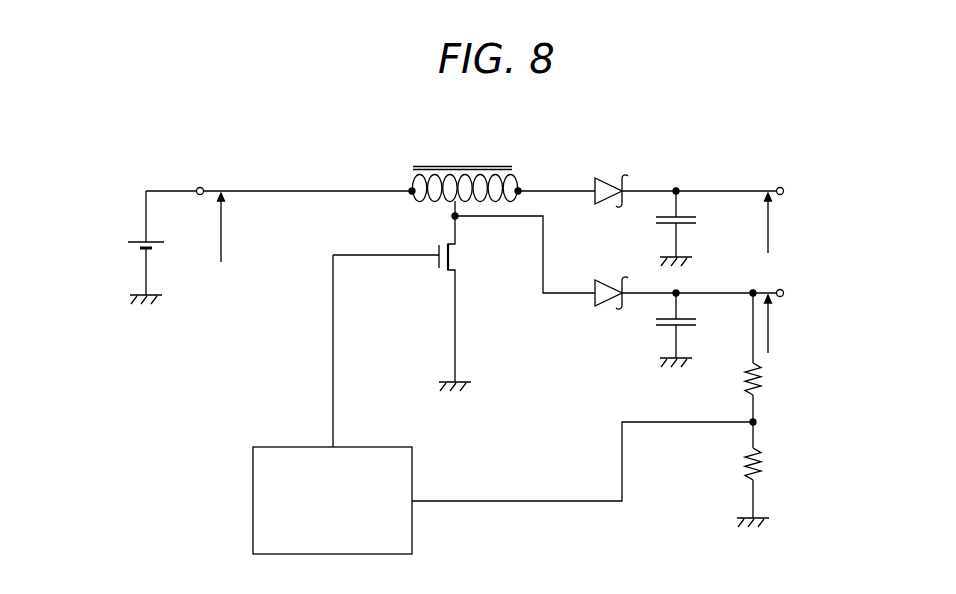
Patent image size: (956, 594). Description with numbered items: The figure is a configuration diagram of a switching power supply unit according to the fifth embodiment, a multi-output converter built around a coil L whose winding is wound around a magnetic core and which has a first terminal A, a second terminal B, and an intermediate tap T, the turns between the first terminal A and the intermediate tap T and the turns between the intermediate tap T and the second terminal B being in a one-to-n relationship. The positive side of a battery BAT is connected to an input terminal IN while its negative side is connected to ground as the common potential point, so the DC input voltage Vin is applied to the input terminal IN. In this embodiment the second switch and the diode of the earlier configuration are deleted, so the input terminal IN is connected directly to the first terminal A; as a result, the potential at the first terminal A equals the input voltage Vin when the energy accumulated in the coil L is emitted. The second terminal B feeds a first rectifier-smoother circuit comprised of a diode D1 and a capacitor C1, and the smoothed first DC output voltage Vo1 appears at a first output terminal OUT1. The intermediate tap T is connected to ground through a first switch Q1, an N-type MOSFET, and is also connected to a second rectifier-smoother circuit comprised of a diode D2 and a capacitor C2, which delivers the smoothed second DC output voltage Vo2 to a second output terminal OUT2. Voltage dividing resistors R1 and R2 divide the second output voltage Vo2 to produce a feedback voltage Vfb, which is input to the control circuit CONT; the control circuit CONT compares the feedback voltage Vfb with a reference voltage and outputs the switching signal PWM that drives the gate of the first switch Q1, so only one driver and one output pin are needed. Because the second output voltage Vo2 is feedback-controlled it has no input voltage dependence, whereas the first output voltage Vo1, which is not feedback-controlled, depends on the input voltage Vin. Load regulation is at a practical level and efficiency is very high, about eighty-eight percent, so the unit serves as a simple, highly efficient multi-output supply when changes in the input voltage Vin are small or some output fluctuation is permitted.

The input terminal IN is at (198, 180).
The battery BAT is at (155, 247).
The input voltage Vin is at (235, 227).
The coil L is at (465, 174).
The first terminal A is at (398, 181).
The second terminal B is at (529, 181).
The intermediate tap T is at (515, 247).
The first switch Q1 is at (450, 254).
The diode D1 is at (611, 179).
The diode D2 is at (611, 281).
The capacitor C1 is at (688, 227).
The capacitor C2 is at (688, 328).
The first output terminal OUT1 is at (805, 191).
The second output terminal OUT2 is at (805, 293).
The first output voltage Vo1 is at (783, 223).
The second output voltage Vo2 is at (783, 324).
The voltage dividing resistor R1 is at (739, 356).
The voltage dividing resistor R2 is at (742, 473).
The feedback voltage Vfb is at (582, 461).
The switching signal PWM is at (355, 351).
The control circuit CONT is at (412, 470).